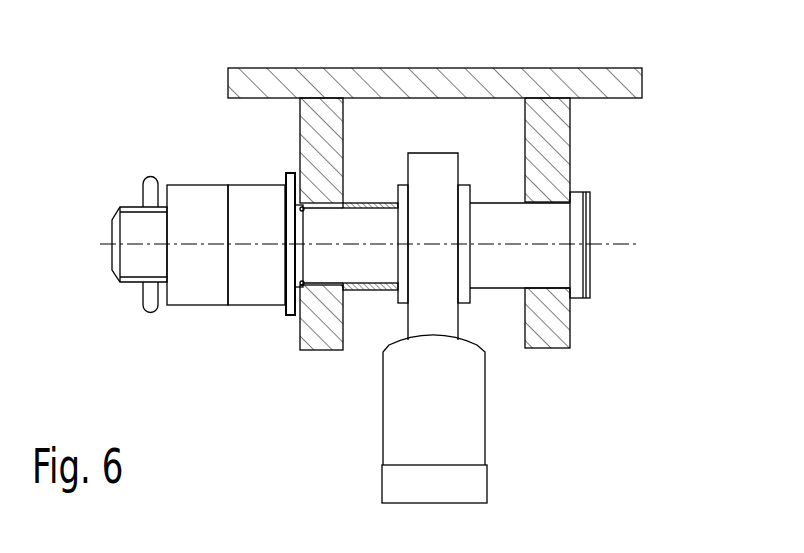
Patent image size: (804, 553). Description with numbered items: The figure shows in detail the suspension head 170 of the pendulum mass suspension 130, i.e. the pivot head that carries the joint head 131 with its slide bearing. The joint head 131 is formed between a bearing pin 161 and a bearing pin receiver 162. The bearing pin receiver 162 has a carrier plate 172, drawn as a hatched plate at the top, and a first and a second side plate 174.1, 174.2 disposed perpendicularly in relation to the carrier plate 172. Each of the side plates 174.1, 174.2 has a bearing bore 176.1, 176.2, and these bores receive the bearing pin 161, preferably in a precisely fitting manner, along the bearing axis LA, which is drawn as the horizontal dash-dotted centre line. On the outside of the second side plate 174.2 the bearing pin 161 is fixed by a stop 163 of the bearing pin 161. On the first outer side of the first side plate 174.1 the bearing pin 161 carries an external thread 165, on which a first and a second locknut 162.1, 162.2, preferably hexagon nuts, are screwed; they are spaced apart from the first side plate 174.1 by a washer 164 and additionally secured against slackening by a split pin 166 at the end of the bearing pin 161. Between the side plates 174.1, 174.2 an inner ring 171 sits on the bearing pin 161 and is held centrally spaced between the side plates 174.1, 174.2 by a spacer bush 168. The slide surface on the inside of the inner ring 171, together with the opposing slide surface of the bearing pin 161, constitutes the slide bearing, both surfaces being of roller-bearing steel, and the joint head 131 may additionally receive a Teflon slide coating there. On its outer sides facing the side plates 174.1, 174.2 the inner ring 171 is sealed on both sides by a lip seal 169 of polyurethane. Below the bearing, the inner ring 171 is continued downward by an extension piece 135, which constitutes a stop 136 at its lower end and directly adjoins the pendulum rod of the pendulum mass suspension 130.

The pendulum mass suspension 130 is at (97, 66).
The joint head 131 is at (436, 427).
The extension piece 135 is at (385, 435).
The stop 136 is at (386, 483).
The bearing pin 161 is at (497, 210).
The bearing pin receiver 162 is at (606, 49).
The first locknut 162.1 is at (252, 183).
The second locknut 162.2 is at (188, 183).
The stop 163 is at (590, 298).
The washer 164 is at (287, 315).
The external thread 165 is at (123, 205).
The split pin 166 is at (143, 312).
The spacer bush 168 is at (330, 350).
The lip seal 169 is at (397, 303).
The suspension head 170 is at (490, 136).
The inner ring 171 is at (435, 153).
The carrier plate 172 is at (645, 82).
The first side plate 174.1 is at (300, 118).
The second side plate 174.2 is at (572, 128).
The first bearing bore 176.1 is at (343, 203).
The second bearing bore 176.2 is at (590, 203).
The bearing axis LA is at (612, 245).